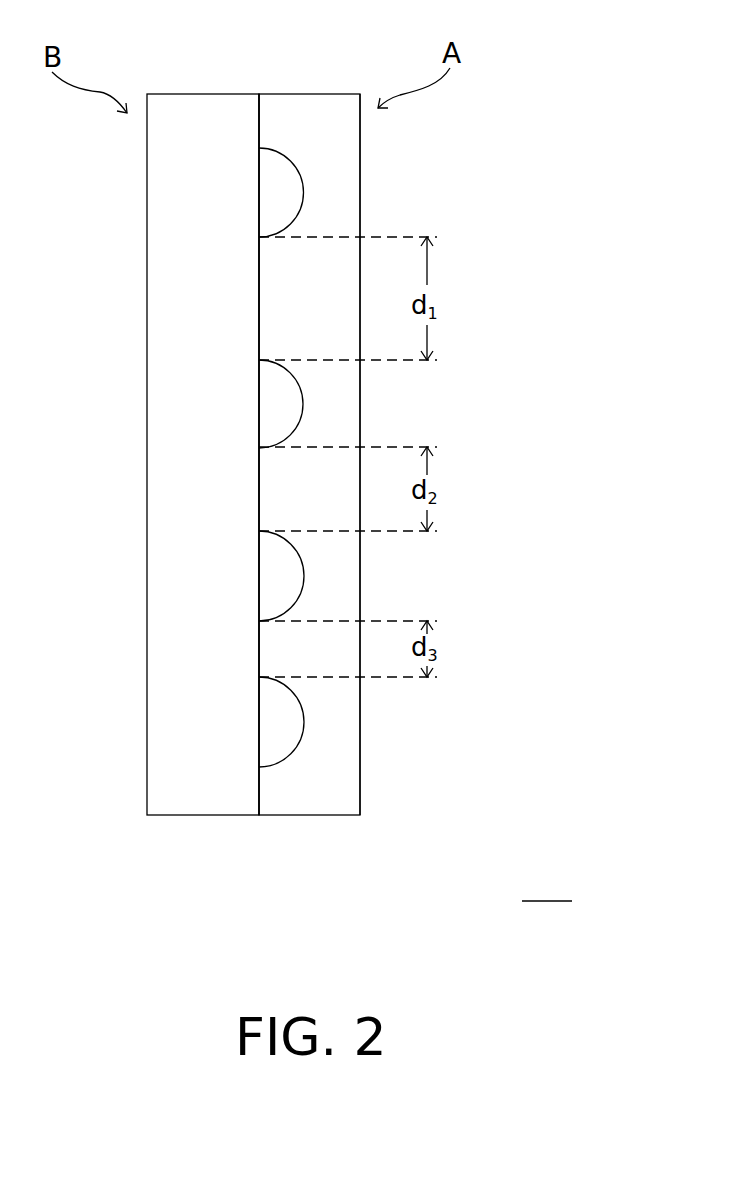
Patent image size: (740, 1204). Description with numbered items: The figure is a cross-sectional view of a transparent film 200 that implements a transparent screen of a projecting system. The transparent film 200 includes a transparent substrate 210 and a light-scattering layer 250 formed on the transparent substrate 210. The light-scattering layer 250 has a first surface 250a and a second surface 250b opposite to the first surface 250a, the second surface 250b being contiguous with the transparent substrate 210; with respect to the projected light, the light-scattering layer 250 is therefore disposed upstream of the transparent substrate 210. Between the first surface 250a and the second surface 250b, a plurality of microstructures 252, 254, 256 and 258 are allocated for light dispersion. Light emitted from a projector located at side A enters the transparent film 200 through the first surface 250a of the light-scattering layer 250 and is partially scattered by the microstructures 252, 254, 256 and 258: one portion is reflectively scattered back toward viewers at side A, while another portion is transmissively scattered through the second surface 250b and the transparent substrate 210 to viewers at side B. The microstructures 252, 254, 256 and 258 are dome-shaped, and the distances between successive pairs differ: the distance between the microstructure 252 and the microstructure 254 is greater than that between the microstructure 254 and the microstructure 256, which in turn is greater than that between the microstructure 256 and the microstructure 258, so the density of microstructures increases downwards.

The transparent film 200 is at (548, 887).
The transparent substrate 210 is at (202, 803).
The light-scattering layer 250 is at (308, 803).
The first surface 250a is at (360, 124).
The second surface 250b is at (259, 124).
The microstructure 252 is at (303, 189).
The microstructure 254 is at (303, 404).
The microstructure 256 is at (303, 576).
The microstructure 258 is at (303, 718).